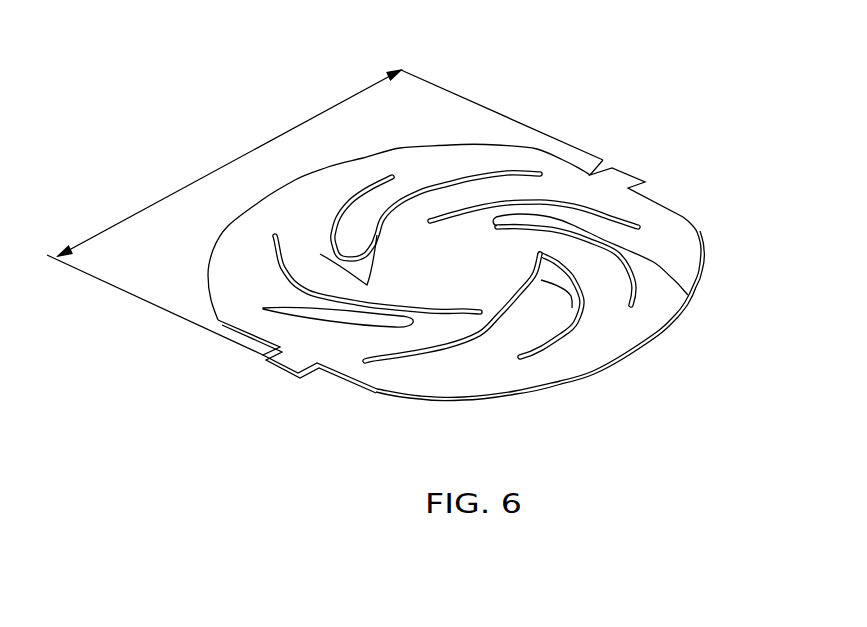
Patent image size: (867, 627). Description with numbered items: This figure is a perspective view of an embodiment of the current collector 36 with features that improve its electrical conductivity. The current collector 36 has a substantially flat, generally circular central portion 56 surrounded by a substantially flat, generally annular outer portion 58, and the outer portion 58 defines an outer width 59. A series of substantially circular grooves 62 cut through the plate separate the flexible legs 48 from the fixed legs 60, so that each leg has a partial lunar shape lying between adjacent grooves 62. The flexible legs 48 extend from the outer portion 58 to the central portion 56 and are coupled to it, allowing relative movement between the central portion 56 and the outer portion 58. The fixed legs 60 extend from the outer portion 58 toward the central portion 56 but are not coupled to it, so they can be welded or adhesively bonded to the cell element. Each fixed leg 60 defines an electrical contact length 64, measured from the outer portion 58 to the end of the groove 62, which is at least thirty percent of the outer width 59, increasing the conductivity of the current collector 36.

The current collector 36 is at (488, 52).
The flexible legs 48 is at (488, 192).
The central portion 56 is at (450, 268).
The outer portion 58 is at (363, 158).
The outer width 59 is at (253, 149).
The fixed legs 60 is at (357, 237).
The grooves 62 is at (362, 182).
The electrical contact length 64 is at (668, 268).